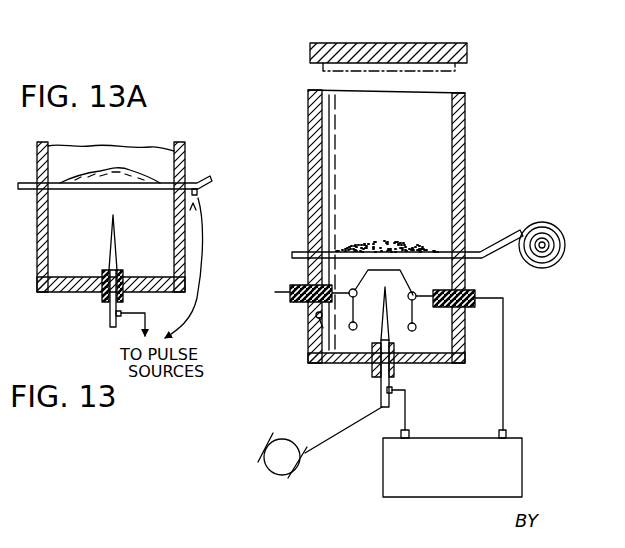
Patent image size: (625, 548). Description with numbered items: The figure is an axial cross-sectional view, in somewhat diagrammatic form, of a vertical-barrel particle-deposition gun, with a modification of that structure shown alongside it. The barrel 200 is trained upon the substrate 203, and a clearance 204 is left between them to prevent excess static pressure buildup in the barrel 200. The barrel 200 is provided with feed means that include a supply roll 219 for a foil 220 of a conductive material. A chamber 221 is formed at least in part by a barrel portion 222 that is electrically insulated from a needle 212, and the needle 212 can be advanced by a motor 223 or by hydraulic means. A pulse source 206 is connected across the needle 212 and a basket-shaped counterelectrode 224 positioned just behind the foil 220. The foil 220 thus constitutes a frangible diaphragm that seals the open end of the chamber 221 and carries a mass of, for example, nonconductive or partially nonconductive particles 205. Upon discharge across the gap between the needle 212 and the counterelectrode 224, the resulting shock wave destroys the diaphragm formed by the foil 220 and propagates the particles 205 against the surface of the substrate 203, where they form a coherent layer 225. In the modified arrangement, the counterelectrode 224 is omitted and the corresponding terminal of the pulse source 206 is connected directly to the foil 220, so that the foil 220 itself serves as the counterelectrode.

In FIG. 13A, the barrel 200 is at (185, 158).
In FIG. 13, the barrel 200 is at (465, 140).
In FIG. 13, the substrate 203 is at (460, 45).
In FIG. 13, the clearance 204 is at (322, 82).
In FIG. 13A, the particles 205 is at (115, 170).
In FIG. 13, the particles 205 is at (388, 248).
In FIG. 13, the pulse source 206 is at (417, 495).
In FIG. 13A, the needle 212 is at (117, 240).
In FIG. 13, the needle 212 is at (393, 378).
In FIG. 13, the supply roll 219 is at (565, 256).
In FIG. 13A, the foil 220 is at (115, 182).
In FIG. 13, the foil 220 is at (500, 240).
In FIG. 13, the chamber 221 is at (310, 333).
In FIG. 13A, the barrel portion 222 is at (184, 263).
In FIG. 13, the barrel portion 222 is at (303, 318).
In FIG. 13, the motor 223 is at (273, 472).
In FIG. 13, the counterelectrode 224 is at (355, 283).
In FIG. 13, the coherent layer 225 is at (473, 77).